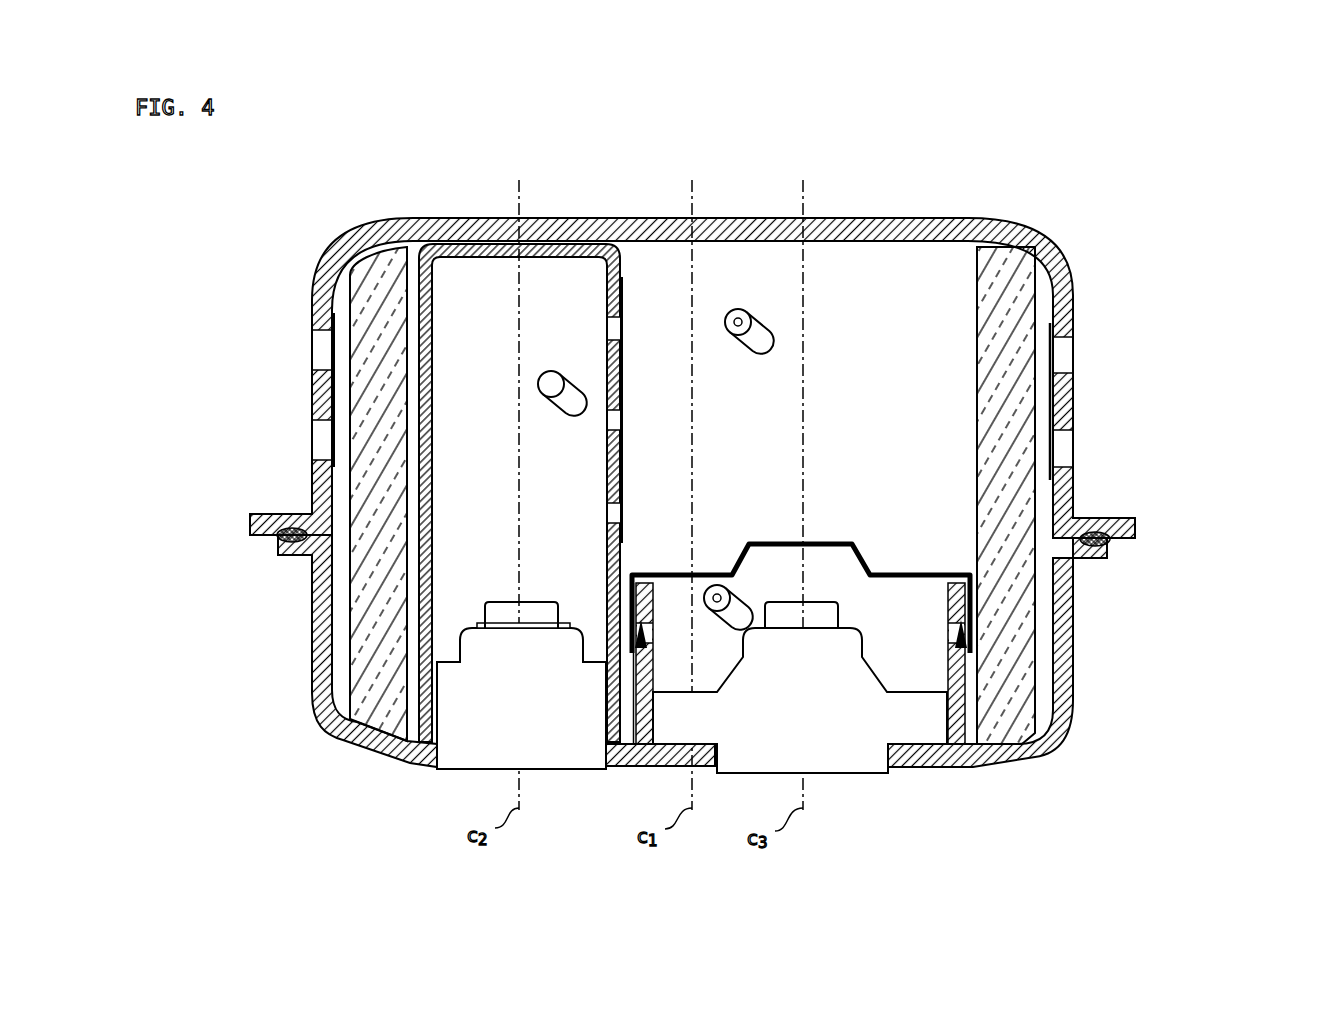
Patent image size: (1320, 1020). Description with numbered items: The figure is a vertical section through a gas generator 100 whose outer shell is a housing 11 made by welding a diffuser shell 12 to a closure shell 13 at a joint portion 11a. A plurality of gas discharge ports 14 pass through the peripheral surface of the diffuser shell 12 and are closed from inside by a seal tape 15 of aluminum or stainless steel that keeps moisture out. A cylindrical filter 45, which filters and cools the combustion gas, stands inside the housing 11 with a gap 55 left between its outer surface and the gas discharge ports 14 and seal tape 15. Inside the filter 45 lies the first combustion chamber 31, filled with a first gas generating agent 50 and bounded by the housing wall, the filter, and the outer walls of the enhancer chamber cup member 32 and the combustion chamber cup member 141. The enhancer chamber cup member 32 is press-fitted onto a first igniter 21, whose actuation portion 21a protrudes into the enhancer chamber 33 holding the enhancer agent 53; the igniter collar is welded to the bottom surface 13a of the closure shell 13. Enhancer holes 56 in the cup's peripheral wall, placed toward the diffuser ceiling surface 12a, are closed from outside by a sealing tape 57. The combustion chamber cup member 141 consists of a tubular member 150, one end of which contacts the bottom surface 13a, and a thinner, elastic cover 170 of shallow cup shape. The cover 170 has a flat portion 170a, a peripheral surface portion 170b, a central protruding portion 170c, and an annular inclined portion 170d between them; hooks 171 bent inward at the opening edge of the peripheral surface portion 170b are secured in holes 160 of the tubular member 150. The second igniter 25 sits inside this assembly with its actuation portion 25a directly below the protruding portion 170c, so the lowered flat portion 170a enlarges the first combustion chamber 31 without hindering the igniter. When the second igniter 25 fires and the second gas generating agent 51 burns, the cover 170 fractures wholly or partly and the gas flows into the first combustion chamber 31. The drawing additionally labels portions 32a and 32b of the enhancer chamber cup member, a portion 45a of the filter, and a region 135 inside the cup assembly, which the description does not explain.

The gas generator 100 is at (582, 135).
The housing 11 is at (1225, 493).
The joint portion 11a is at (280, 543).
The diffuser shell 12 is at (1073, 500).
The diffuser ceiling surface 12a is at (847, 220).
The closure shell 13 is at (1077, 587).
The bottom surface 13a is at (923, 770).
The gas discharge ports 14 is at (320, 443).
The seal tape 15 is at (333, 312).
The first igniter 21 is at (576, 726).
The actuation portion 21a is at (527, 602).
The second igniter 25 is at (875, 743).
The actuation portion 25a is at (790, 628).
The first combustion chamber 31 is at (910, 313).
The enhancer chamber cup member 32 is at (627, 272).
The top plate of inner case 32a is at (477, 247).
The side wall of inner case 32b is at (432, 495).
The enhancer chamber 33 is at (488, 326).
The cylindrical filter 45 is at (1003, 249).
The corner of wall portion 45a is at (373, 240).
The first gas generating agent 50 is at (740, 307).
The second gas generating agent 51 is at (736, 606).
The enhancer agent 53 is at (566, 382).
The gap 55 is at (340, 662).
The enhancer holes 56 is at (610, 420).
The sealing tape 57 is at (623, 342).
The accommodating space 135 is at (936, 621).
The combustion chamber cup member 141 is at (1158, 725).
The tubular member 150 is at (895, 670).
The holes 160 is at (653, 637).
The cover 170 is at (918, 628).
The flat portion 170a is at (915, 575).
The peripheral surface portion 170b is at (972, 607).
The protruding portion 170c is at (812, 545).
The annular inclined portion 170d is at (735, 573).
The hooks 171 is at (948, 637).